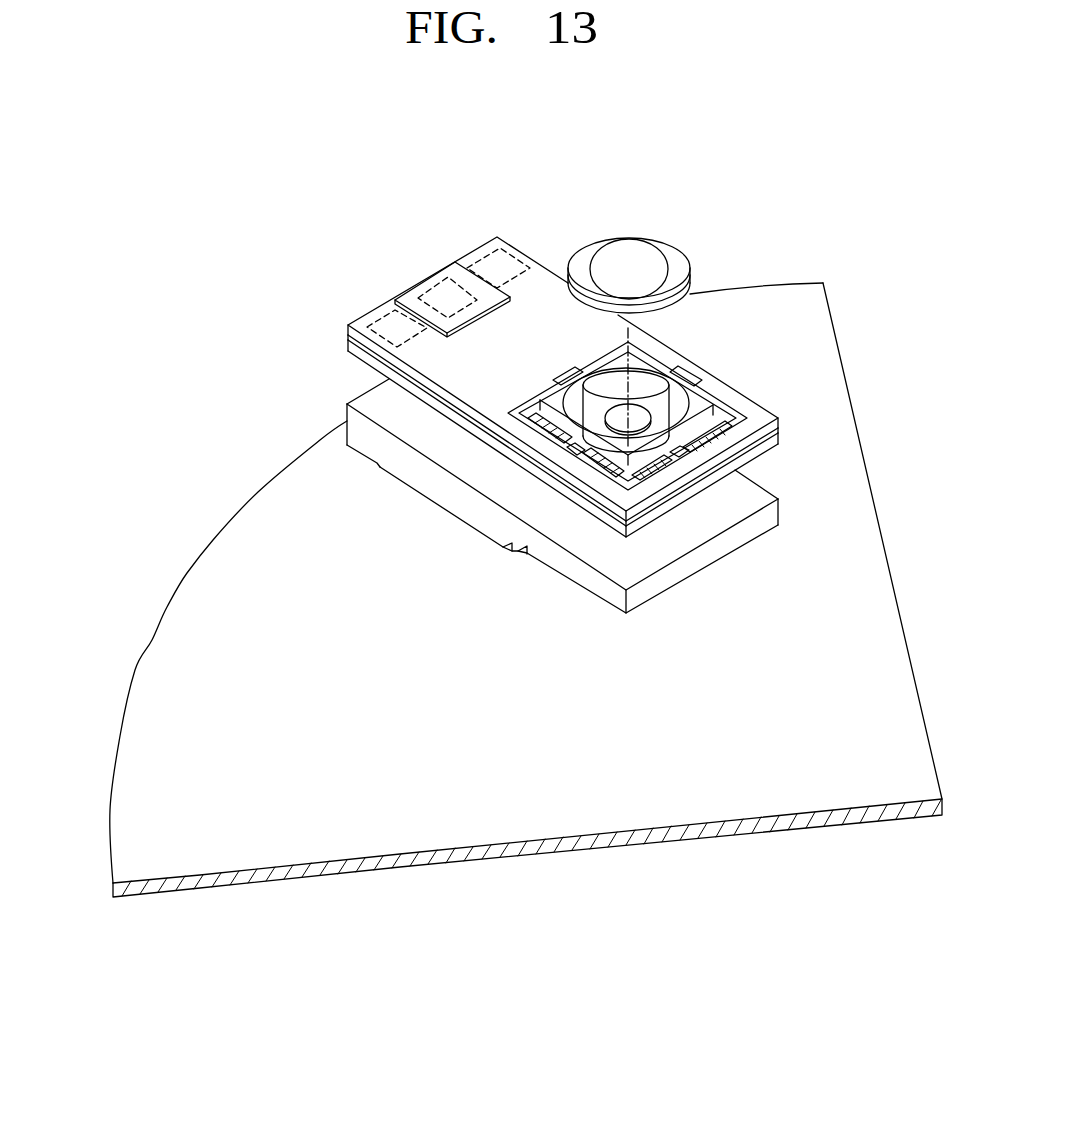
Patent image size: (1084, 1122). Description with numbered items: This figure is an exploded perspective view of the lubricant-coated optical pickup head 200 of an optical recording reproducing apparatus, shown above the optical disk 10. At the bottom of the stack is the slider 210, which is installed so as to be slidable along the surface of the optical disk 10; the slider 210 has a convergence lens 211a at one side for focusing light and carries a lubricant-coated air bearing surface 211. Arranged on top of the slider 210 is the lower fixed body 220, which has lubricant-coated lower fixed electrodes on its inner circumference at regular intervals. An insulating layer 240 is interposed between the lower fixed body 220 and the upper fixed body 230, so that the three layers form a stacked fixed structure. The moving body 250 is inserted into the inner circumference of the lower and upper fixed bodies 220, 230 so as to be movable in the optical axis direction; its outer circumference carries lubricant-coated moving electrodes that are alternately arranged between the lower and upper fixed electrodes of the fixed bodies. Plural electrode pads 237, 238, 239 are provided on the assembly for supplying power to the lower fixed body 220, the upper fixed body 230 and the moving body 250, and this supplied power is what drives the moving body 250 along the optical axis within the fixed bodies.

The optical disk 10 is at (172, 653).
The optical pickup head 200 is at (558, 115).
The slider 210 is at (354, 436).
The air bearing surface 211 is at (377, 464).
The convergence lens 211a is at (588, 257).
The lower fixed body 220 is at (347, 352).
The upper fixed body 230 is at (347, 328).
The insulating layer 240 is at (347, 341).
The electrode pad 237 is at (372, 322).
The electrode pad 238 is at (478, 258).
The electrode pad 239 is at (424, 286).
The moving body 250 is at (700, 404).